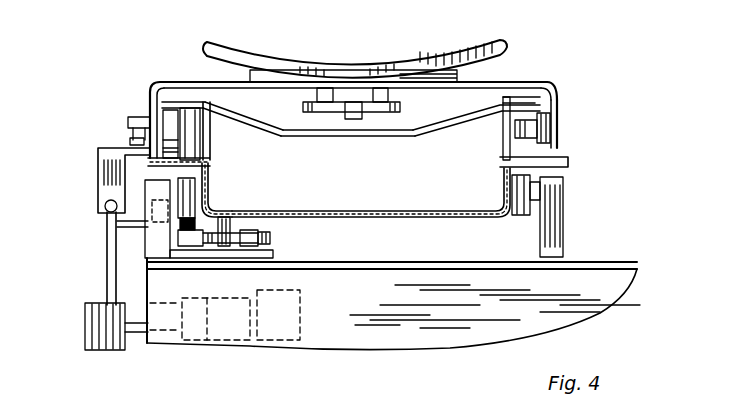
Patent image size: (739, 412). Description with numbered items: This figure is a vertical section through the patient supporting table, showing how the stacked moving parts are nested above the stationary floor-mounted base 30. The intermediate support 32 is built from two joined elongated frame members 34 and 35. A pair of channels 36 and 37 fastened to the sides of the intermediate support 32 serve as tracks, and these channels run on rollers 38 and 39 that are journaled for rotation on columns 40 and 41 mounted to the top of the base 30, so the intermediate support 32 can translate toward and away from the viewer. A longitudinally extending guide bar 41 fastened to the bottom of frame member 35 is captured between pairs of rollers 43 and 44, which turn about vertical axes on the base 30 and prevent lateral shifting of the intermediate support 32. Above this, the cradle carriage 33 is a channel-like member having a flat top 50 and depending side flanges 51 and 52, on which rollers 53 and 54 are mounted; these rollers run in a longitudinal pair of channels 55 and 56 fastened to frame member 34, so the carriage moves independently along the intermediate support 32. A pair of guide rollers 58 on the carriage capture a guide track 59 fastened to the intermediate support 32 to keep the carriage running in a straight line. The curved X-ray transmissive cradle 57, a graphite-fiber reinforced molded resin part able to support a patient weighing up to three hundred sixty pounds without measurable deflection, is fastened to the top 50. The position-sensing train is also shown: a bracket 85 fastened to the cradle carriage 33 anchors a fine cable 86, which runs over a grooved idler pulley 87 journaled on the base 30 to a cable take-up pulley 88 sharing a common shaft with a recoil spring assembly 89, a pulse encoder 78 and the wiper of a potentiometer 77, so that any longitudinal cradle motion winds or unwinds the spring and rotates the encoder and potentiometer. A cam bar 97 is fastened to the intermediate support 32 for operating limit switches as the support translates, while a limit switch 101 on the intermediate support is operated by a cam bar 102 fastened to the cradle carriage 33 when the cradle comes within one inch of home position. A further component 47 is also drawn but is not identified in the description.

The floor-mounted base 30 is at (432, 285).
The intermediate support 32 is at (587, 162).
The cradle carriage 33 is at (570, 122).
The frame member 34 is at (212, 163).
The frame member 35 is at (210, 182).
The channel 36 is at (182, 223).
The channel 37 is at (520, 216).
The roller 38 is at (205, 196).
The roller 39 is at (523, 222).
The column 40 is at (160, 243).
The column / guide bar 41 is at (553, 200).
The roller 43 is at (270, 237).
The roller 44 is at (200, 258).
The bracket horizontal web 47 is at (226, 214).
The flat top 50 is at (538, 82).
The side flange 51 is at (147, 82).
The side flange 52 is at (560, 92).
The roller 53 is at (213, 140).
The roller 54 is at (475, 120).
The channel 55 is at (258, 118).
The channel 56 is at (513, 130).
The X-ray transmissive cradle 57 is at (406, 62).
The guide roller 58 is at (392, 112).
The guide track 59 is at (355, 119).
The potentiometer 77 is at (305, 305).
The pulse encoder 78 is at (233, 343).
The bracket 85 is at (105, 172).
The cable 86 is at (107, 284).
The idler pulley 87 is at (103, 214).
The cable take-up pulley 88 is at (85, 325).
The recoil spring assembly 89 is at (185, 343).
The cam bar 97 is at (110, 240).
The limit switch 101 is at (130, 141).
The cam bar 102 is at (128, 120).